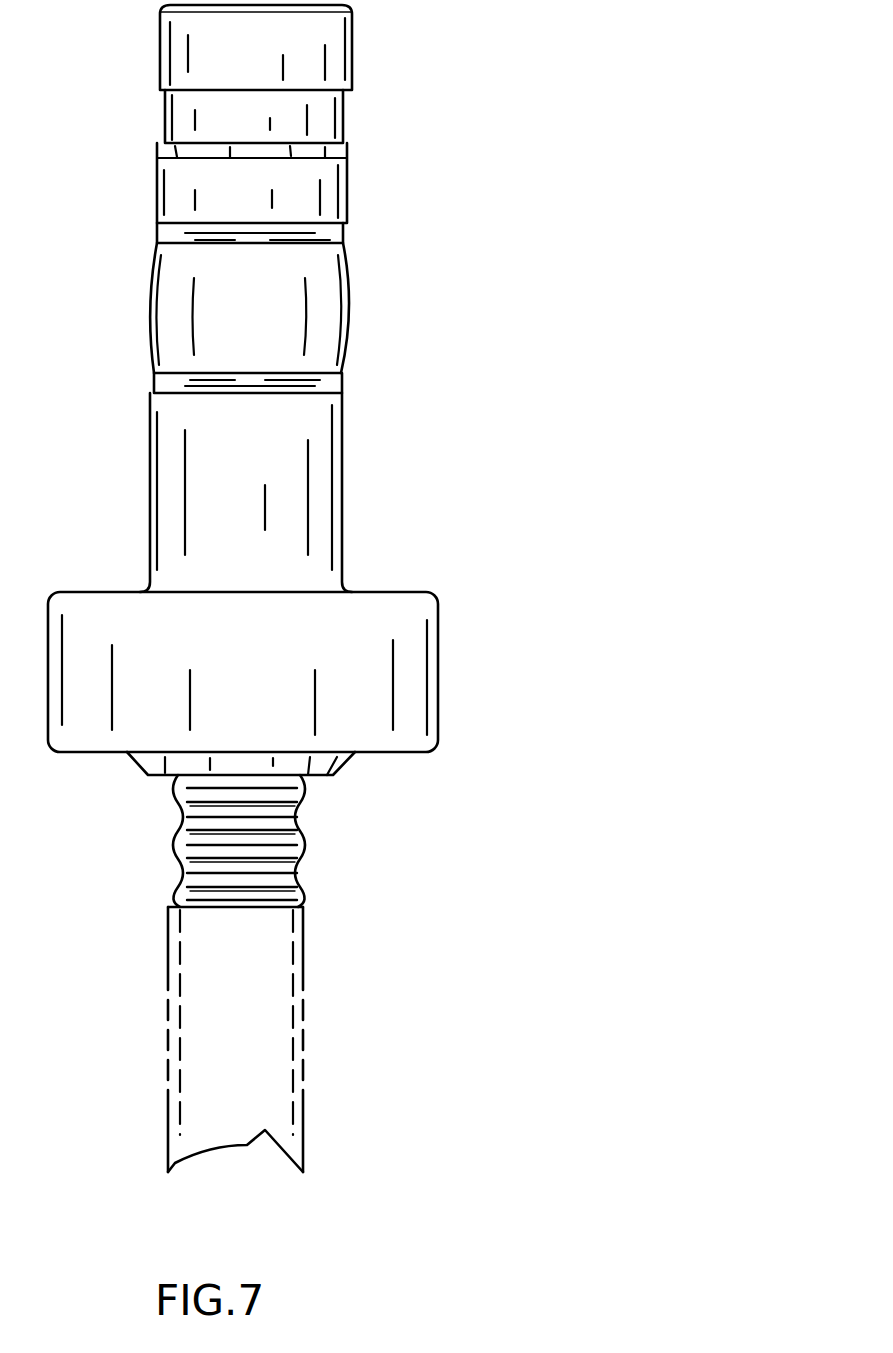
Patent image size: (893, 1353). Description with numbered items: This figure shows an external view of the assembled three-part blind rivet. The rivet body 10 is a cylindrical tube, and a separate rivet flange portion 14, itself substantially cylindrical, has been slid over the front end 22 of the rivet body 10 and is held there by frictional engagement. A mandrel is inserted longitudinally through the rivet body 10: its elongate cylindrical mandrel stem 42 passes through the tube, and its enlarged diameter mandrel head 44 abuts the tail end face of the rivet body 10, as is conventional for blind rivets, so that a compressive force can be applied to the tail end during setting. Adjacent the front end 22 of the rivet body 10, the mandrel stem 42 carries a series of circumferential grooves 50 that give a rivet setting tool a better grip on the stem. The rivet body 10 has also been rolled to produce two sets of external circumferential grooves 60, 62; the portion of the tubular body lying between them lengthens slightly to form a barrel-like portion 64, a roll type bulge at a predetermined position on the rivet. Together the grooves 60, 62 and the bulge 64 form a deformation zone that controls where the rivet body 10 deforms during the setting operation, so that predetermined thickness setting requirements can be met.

The rivet body 10 is at (288, 492).
The rivet flange portion 14 is at (327, 650).
The front end of the rivet body 22 is at (145, 772).
The mandrel stem 42 is at (255, 1000).
The mandrel head 44 is at (303, 37).
The circumferential grooves 50 is at (297, 845).
The external circumferential groove 60 is at (347, 230).
The external circumferential groove 62 is at (342, 378).
The barrel-like portion of the rivet body 64 is at (332, 293).